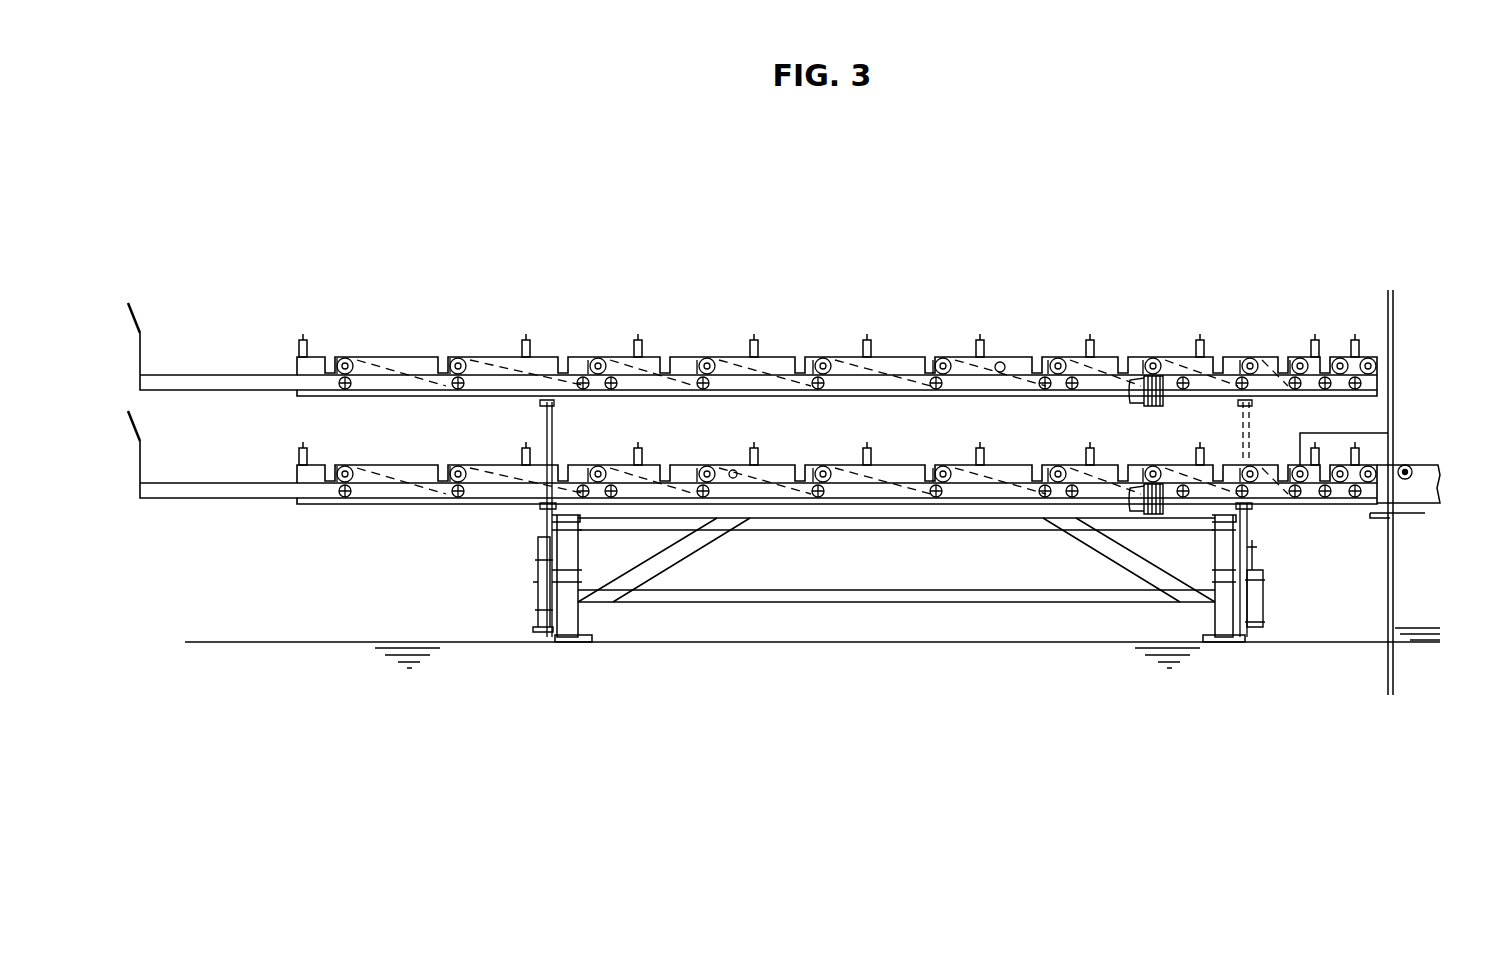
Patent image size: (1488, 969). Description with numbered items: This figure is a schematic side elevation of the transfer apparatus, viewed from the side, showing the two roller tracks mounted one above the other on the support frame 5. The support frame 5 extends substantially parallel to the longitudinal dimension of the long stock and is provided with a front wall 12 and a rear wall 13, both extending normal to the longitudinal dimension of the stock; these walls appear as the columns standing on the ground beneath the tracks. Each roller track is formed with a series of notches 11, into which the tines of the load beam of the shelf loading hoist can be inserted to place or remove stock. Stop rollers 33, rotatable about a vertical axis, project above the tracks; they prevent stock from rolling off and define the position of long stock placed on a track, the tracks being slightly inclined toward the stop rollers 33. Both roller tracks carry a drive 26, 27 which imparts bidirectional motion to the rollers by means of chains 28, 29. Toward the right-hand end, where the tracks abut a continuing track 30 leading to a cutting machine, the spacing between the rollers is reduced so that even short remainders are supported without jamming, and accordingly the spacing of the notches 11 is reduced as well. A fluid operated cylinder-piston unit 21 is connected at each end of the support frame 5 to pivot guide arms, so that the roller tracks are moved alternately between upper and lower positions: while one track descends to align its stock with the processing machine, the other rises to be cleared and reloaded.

The support frame 5 is at (897, 597).
The notches 11 is at (663, 357).
The front wall 12 is at (1225, 622).
The rear wall 13 is at (570, 623).
The fluid operated cylinder-piston unit 21 is at (530, 592).
The drive 26 is at (1130, 357).
The drive 27 is at (1135, 515).
The chain 28 is at (1000, 357).
The chain 29 is at (733, 472).
The continuing track 30 is at (1417, 477).
The stop rollers 33 is at (530, 338).